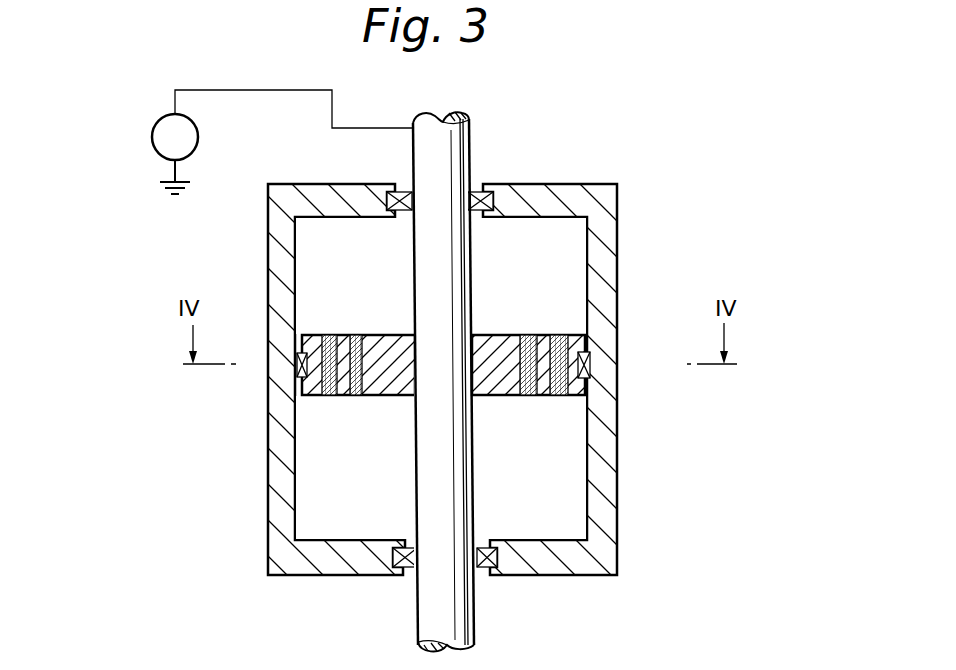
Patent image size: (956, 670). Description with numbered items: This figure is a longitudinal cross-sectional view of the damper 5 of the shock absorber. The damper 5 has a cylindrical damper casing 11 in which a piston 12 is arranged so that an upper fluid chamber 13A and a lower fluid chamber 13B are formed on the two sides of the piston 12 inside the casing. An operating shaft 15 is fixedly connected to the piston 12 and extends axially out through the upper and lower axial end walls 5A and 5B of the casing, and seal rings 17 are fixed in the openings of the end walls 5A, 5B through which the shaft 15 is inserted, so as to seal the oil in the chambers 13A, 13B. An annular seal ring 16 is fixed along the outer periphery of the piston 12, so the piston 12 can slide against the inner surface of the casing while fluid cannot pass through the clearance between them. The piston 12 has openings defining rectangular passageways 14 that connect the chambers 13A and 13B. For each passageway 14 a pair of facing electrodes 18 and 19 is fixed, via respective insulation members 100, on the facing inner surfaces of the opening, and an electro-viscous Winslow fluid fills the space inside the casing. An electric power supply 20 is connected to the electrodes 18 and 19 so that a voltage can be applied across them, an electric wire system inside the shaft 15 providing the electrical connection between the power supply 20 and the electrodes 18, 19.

The damper 5 is at (421, 369).
The axial end wall 5A is at (553, 200).
The axial end wall 5B is at (585, 578).
The damper casing 11 is at (271, 258).
The piston 12 is at (443, 367).
The fluid chamber 13A is at (572, 252).
The fluid chamber 13B is at (570, 492).
The passageway 14 is at (343, 335).
The operating shaft 15 is at (455, 145).
The annular seal ring 16 is at (590, 365).
The seal ring 17 is at (482, 190).
The electrode 18 is at (333, 398).
The electrode 19 is at (355, 398).
The electric power supply 20 is at (159, 121).
The insulation member 100 is at (365, 335).